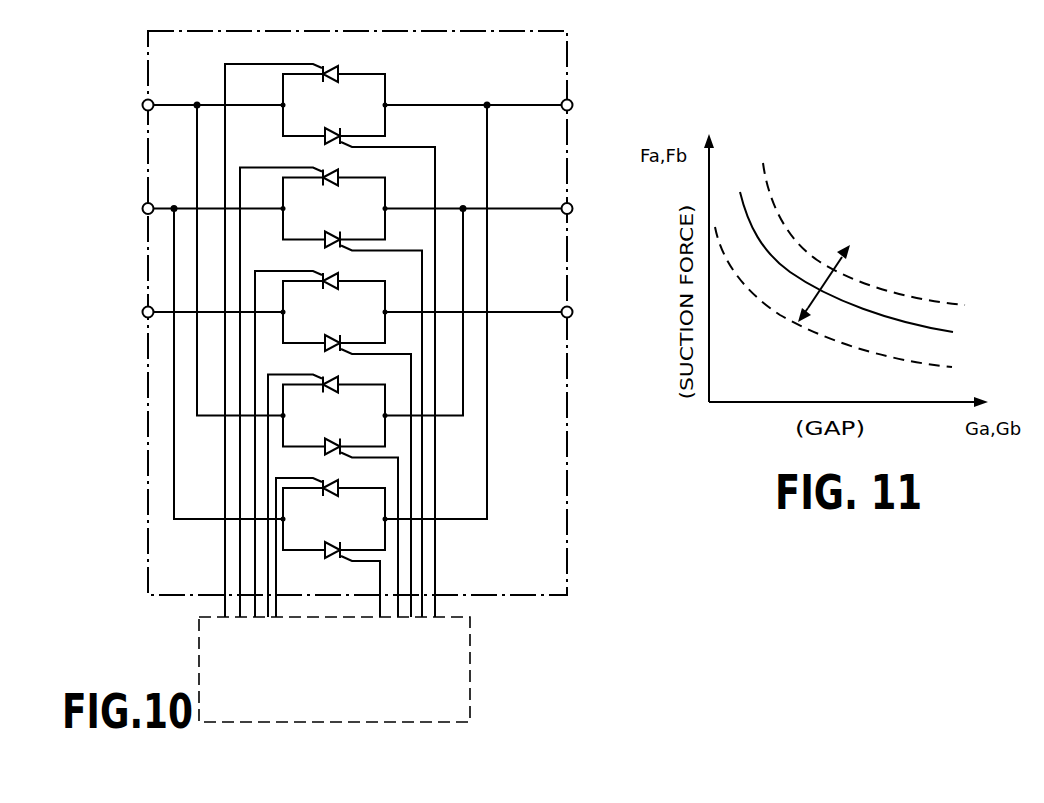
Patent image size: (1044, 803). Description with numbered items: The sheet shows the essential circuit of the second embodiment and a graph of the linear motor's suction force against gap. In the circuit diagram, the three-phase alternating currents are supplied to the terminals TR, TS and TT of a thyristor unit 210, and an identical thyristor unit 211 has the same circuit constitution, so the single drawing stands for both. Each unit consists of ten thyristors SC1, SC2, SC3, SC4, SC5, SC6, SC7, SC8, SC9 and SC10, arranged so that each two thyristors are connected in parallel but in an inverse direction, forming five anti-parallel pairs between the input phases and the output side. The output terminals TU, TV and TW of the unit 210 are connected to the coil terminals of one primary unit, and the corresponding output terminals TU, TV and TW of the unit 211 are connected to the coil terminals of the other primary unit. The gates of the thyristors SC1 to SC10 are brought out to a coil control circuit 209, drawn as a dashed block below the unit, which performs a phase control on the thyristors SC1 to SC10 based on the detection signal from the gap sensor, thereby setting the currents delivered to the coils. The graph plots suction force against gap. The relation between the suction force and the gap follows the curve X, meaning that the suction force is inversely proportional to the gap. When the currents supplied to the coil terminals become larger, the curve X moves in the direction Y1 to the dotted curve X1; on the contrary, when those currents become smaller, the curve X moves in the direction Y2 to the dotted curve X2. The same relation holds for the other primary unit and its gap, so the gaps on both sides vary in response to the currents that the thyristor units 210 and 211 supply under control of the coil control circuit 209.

In FIG. 10, the thyristor SC1 is at (333, 71).
In FIG. 10, the thyristor SC2 is at (331, 128).
In FIG. 10, the thyristor SC3 is at (333, 175).
In FIG. 10, the thyristor SC4 is at (331, 231).
In FIG. 10, the thyristor SC5 is at (333, 278).
In FIG. 10, the thyristor SC6 is at (331, 335).
In FIG. 10, the thyristor SC7 is at (333, 381).
In FIG. 10, the thyristor SC8 is at (331, 438).
In FIG. 10, the thyristor SC9 is at (333, 484).
In FIG. 10, the thyristor SC10 is at (331, 542).
In FIG. 10, the coil control circuit 209 is at (471, 697).
In FIG. 10, the thyristor unit 210 is at (567, 90).
In FIG. 10, the thyristor unit 211 is at (420, 313).
In FIG. 10, the terminal TR is at (197, 106).
In FIG. 10, the terminal TS is at (197, 209).
In FIG. 10, the terminal TT is at (197, 313).
In FIG. 10, the output terminal TU is at (492, 107).
In FIG. 10, the output terminal TV is at (492, 210).
In FIG. 10, the output terminal TW is at (494, 314).
In FIG. 11, the curve X is at (742, 194).
In FIG. 11, the dotted curve X1 is at (764, 163).
In FIG. 11, the dotted curve X2 is at (724, 256).
In FIG. 11, the direction Y1 is at (842, 270).
In FIG. 11, the direction Y2 is at (794, 331).